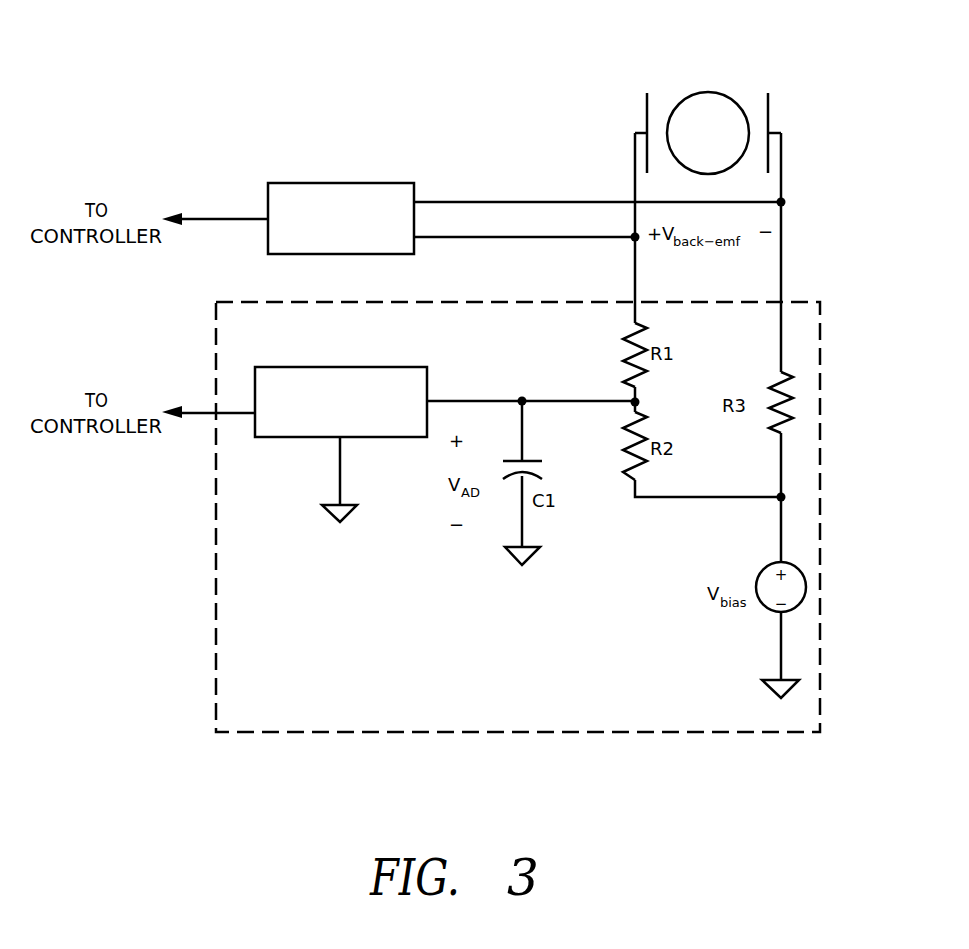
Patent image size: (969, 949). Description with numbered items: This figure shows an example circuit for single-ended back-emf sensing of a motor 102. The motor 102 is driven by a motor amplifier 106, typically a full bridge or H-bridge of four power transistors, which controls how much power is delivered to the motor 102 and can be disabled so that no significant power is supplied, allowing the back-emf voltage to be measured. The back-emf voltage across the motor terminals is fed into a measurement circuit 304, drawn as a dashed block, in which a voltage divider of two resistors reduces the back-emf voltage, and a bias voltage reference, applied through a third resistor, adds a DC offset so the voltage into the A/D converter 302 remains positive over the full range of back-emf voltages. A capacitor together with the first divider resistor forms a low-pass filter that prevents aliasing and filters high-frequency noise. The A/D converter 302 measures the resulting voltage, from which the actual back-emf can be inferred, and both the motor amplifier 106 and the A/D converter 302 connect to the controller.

The motor 102 is at (722, 72).
The motor amplifier 106 is at (365, 182).
The A/D converter 302 is at (372, 366).
The measurement circuit 304 is at (822, 386).